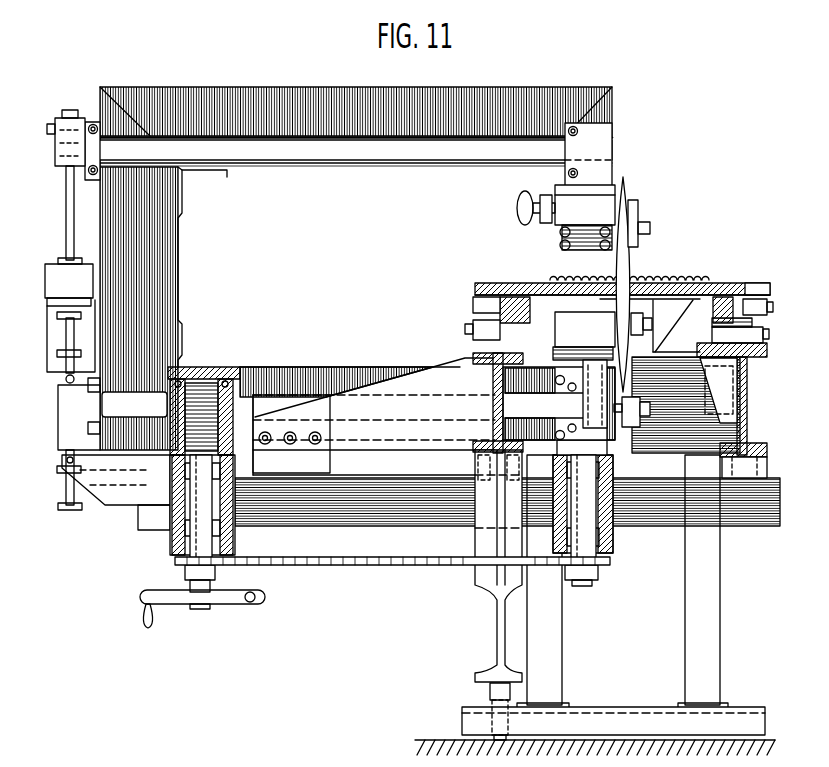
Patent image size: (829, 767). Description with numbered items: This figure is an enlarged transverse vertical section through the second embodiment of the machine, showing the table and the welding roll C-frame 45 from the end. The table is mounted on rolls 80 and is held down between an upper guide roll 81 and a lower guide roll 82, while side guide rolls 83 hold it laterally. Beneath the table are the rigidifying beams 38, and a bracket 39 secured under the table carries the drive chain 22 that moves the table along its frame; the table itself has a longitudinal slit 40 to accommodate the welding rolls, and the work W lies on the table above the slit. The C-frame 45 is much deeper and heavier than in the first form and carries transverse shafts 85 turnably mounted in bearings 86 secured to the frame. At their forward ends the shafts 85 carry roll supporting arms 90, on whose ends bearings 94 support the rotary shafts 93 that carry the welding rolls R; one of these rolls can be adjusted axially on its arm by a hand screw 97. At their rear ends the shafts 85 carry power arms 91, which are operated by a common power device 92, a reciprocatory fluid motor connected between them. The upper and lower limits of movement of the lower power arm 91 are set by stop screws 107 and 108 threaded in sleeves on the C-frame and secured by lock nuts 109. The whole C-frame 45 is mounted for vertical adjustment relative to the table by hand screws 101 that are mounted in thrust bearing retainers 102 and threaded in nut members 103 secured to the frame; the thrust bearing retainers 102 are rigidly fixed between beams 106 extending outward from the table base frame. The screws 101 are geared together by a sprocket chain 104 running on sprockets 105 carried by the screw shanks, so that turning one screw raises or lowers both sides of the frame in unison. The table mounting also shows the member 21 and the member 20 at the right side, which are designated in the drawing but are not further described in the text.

The welding roll C-frame 45 is at (485, 90).
The transverse shafts 85 is at (340, 160).
The bearings 86 is at (92, 118).
The power arms 91 is at (58, 140).
The power device 92 is at (47, 313).
The stop screw 107 is at (62, 340).
The lock nuts 109 is at (58, 360).
The stop screw 108 is at (65, 490).
The nut members 103 is at (246, 368).
The hand screws 101 is at (197, 372).
The thrust bearing retainers 102 is at (172, 528).
The sprockets 105 is at (186, 571).
The sprocket chain 104 is at (350, 566).
The beams 106 is at (270, 527).
The guide roll 81 is at (490, 283).
The longitudinal slit 40 is at (622, 290).
The workpiece W is at (688, 283).
The rigidifying beams 38 is at (530, 285).
The side guide rolls 83 is at (473, 318).
The guide roll 82 is at (473, 337).
The rolls 80 is at (766, 336).
The brace 21 is at (745, 288).
The bracket 39 is at (658, 340).
The drum 20 is at (748, 416).
The drive chain 22 is at (638, 428).
The welding rolls R is at (628, 260).
The rotary shafts 93 is at (645, 230).
The bearings 94 is at (585, 266).
The roll supporting arms 90 is at (600, 172).
The hand screw 97 is at (517, 211).